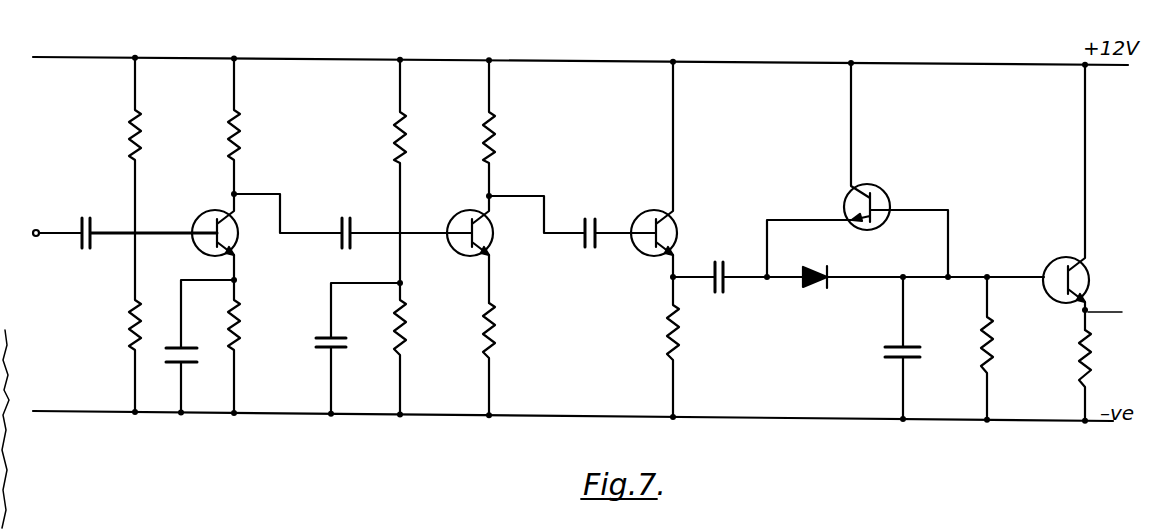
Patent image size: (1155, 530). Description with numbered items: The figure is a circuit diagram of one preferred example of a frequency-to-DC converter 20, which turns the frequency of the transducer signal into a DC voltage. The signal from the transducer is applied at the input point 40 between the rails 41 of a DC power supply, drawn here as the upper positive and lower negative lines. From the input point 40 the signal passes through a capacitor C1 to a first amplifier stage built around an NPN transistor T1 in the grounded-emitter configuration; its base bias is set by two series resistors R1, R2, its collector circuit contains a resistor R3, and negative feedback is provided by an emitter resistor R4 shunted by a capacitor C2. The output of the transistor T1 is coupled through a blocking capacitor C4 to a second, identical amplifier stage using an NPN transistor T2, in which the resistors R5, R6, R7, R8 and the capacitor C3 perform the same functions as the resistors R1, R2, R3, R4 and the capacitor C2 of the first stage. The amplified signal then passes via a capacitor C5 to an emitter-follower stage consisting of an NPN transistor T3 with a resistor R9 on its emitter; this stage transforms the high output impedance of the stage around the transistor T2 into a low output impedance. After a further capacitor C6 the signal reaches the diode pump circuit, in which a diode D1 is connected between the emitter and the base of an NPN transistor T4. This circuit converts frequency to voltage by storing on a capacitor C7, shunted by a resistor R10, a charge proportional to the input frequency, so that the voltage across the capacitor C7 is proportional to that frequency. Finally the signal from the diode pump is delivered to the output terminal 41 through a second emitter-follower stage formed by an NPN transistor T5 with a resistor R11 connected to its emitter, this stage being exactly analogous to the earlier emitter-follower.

The frequency-to-DC converter 20 is at (718, 53).
The signal input point 40 is at (50, 222).
The output terminal 41 is at (1087, 313).
The bias resistor R1 is at (119, 145).
The bias resistor R2 is at (117, 322).
The collector resistor R3 is at (216, 127).
The feedback resistor R4 is at (251, 346).
The bias resistor R5 is at (382, 171).
The bias resistor R6 is at (383, 348).
The collector resistor R7 is at (471, 128).
The feedback resistor R8 is at (469, 359).
The emitter resistor R9 is at (654, 347).
The shunt resistor R10 is at (966, 348).
The emitter resistor R11 is at (1063, 375).
The input capacitor C1 is at (147, 223).
The shunt capacitor C2 is at (200, 346).
The shunt capacitor C3 is at (358, 348).
The blocking capacitor C4 is at (353, 221).
The coupling capacitor C5 is at (572, 220).
The coupling capacitor C6 is at (738, 265).
The storage capacitor C7 is at (911, 348).
The NPN transistor T1 is at (231, 237).
The NPN transistor T2 is at (486, 249).
The NPN transistor T3 is at (672, 169).
The NPN transistor T4 is at (857, 170).
The NPN transistor T5 is at (1081, 187).
The diode D1 is at (923, 262).